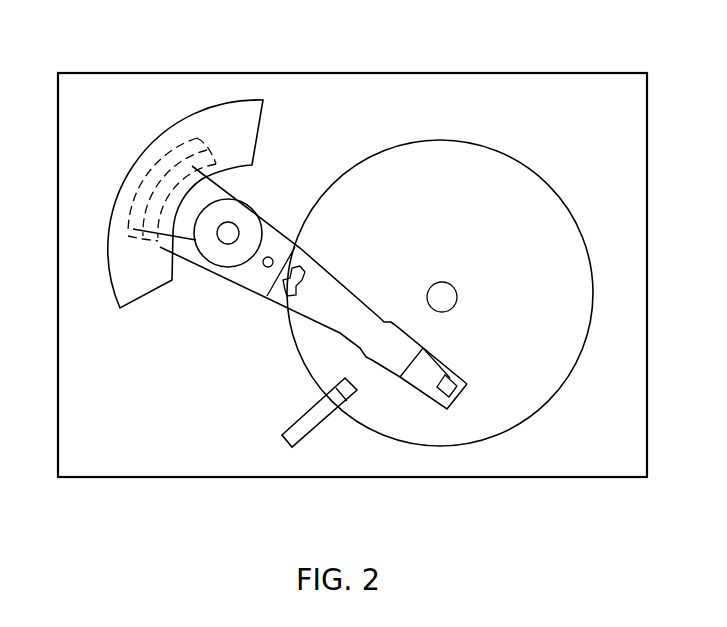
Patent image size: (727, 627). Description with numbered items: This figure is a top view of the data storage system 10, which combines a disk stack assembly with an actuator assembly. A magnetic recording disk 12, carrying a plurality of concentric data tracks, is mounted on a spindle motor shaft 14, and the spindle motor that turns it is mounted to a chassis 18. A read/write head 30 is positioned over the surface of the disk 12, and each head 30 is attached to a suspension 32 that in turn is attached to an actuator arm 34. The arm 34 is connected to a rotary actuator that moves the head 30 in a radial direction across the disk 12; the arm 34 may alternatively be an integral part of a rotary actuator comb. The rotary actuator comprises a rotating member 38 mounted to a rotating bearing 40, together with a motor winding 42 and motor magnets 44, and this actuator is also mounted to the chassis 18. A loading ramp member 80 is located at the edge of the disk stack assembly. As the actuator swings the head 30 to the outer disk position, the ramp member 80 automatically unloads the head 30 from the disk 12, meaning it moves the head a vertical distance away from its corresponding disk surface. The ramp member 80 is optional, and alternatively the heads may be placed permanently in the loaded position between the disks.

The data storage system 10 is at (163, 507).
The magnetic recording disk 12 is at (452, 191).
The spindle motor shaft 14 is at (453, 290).
The chassis 18 is at (610, 127).
The read/write head 30 is at (462, 394).
The suspension 32 is at (322, 293).
The actuator arm 34 is at (269, 256).
The rotating member 38 is at (227, 258).
The rotating bearing 40 is at (228, 222).
The motor winding 42 is at (140, 235).
The motor magnets 44 is at (232, 132).
The loading ramp member 80 is at (296, 418).